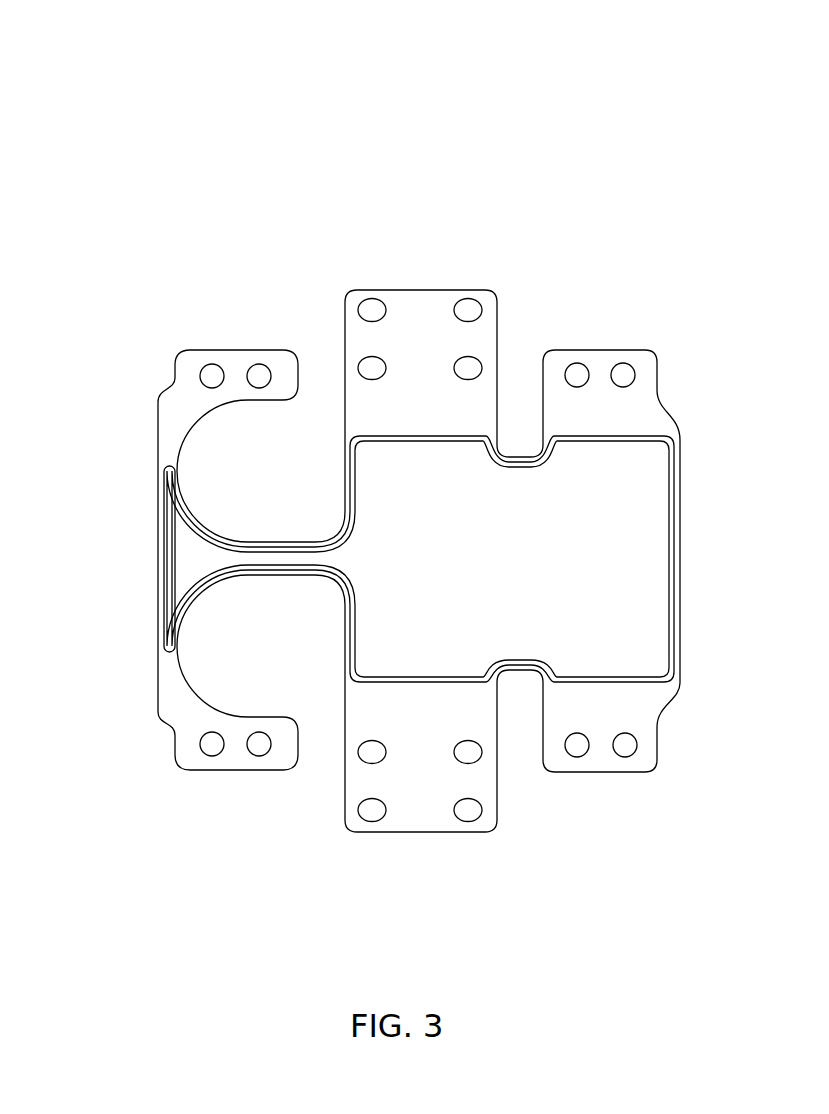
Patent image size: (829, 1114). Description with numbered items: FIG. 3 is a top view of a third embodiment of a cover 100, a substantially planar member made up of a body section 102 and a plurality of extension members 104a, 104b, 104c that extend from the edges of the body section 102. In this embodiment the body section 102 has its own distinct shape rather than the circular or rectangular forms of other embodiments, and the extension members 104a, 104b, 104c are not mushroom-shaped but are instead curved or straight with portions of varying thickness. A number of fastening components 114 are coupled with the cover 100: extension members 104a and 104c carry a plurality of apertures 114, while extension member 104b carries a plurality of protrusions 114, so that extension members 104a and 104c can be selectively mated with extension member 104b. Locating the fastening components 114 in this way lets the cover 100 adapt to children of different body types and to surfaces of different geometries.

The cover 100 is at (600, 165).
The body section 102 is at (615, 487).
The extension member 104a is at (187, 553).
The extension member 104b is at (413, 787).
The extension member 104c is at (573, 405).
The fastening components 114 is at (256, 371).